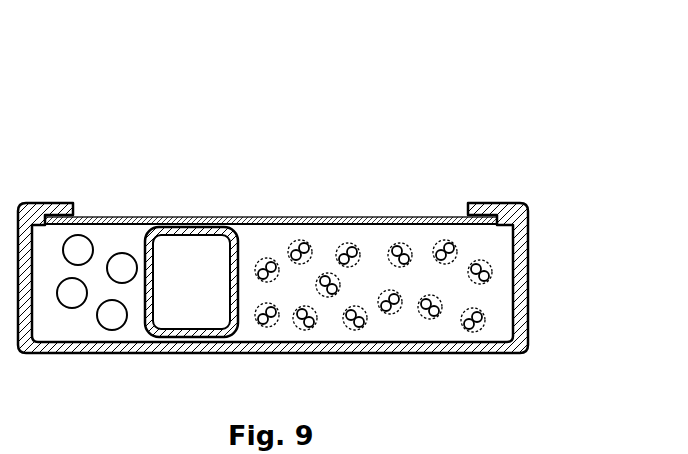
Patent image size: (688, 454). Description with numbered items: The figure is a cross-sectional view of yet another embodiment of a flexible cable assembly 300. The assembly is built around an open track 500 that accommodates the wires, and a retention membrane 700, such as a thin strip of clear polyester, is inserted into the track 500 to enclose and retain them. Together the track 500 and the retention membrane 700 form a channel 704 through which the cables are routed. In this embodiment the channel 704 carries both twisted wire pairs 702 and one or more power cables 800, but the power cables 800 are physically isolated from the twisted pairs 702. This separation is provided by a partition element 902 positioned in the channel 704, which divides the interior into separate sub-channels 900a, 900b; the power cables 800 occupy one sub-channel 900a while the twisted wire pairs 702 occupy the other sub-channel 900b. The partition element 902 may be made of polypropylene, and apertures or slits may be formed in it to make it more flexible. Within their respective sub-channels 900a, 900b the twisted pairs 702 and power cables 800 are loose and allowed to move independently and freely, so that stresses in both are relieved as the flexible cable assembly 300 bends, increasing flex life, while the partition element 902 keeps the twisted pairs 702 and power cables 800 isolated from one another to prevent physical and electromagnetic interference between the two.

The flexible cable assembly 300 is at (182, 94).
The open track 500 is at (432, 345).
The retention membrane 700 is at (421, 216).
The twisted wire pairs 702 is at (347, 242).
The channel 704 is at (538, 203).
The power cables 800 is at (120, 252).
The sub-channel 900a is at (78, 328).
The sub-channel 900b is at (329, 330).
The partition element 902 is at (189, 226).